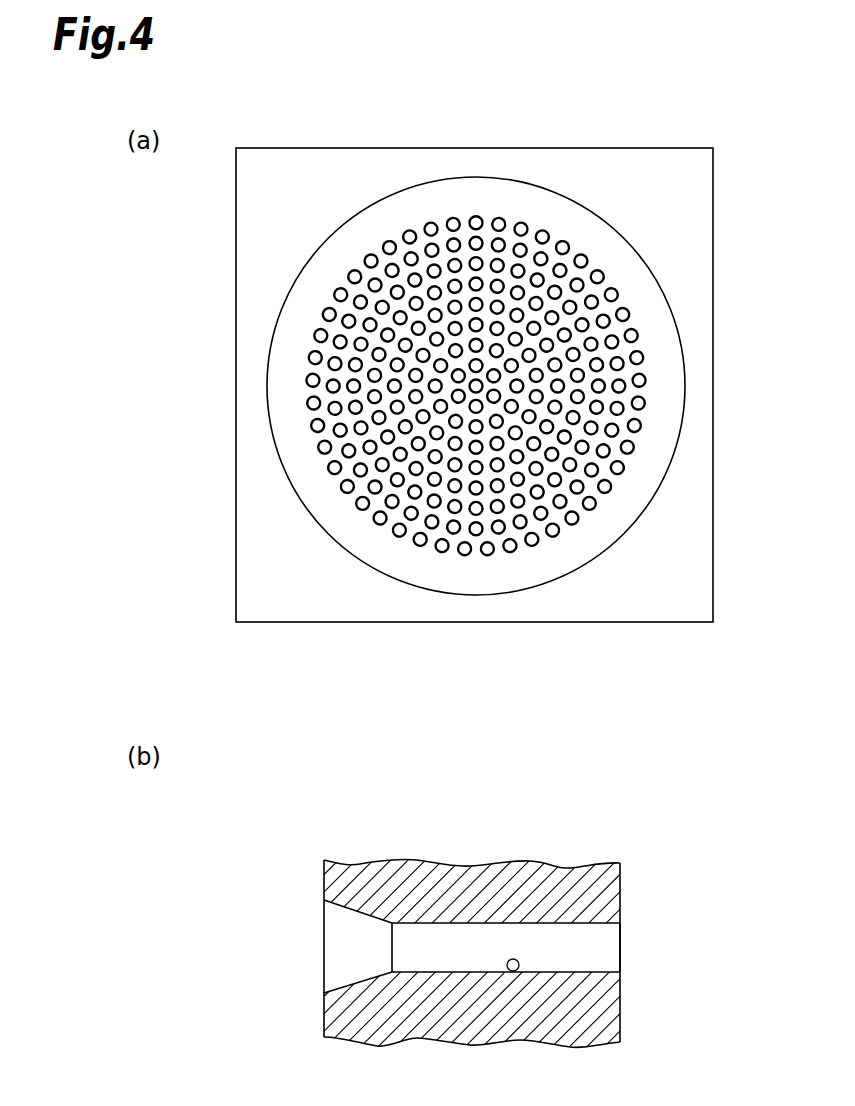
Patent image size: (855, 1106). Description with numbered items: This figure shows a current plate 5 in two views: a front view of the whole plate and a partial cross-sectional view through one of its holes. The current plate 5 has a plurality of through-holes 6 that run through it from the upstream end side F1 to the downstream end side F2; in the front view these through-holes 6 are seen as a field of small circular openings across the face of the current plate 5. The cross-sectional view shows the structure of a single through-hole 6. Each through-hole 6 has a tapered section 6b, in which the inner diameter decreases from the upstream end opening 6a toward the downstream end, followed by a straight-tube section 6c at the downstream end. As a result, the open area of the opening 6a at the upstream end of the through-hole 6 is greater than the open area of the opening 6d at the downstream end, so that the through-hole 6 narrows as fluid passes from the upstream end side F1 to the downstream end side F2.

The current plate 5 is at (692, 537).
The through-hole 6 is at (396, 534).
The upstream end opening 6a is at (324, 944).
The tapered section 6b is at (368, 977).
The straight-tube section 6c is at (511, 971).
The downstream end opening 6d is at (620, 944).
The upstream end side F1 is at (667, 371).
The downstream end side F2 is at (620, 882).